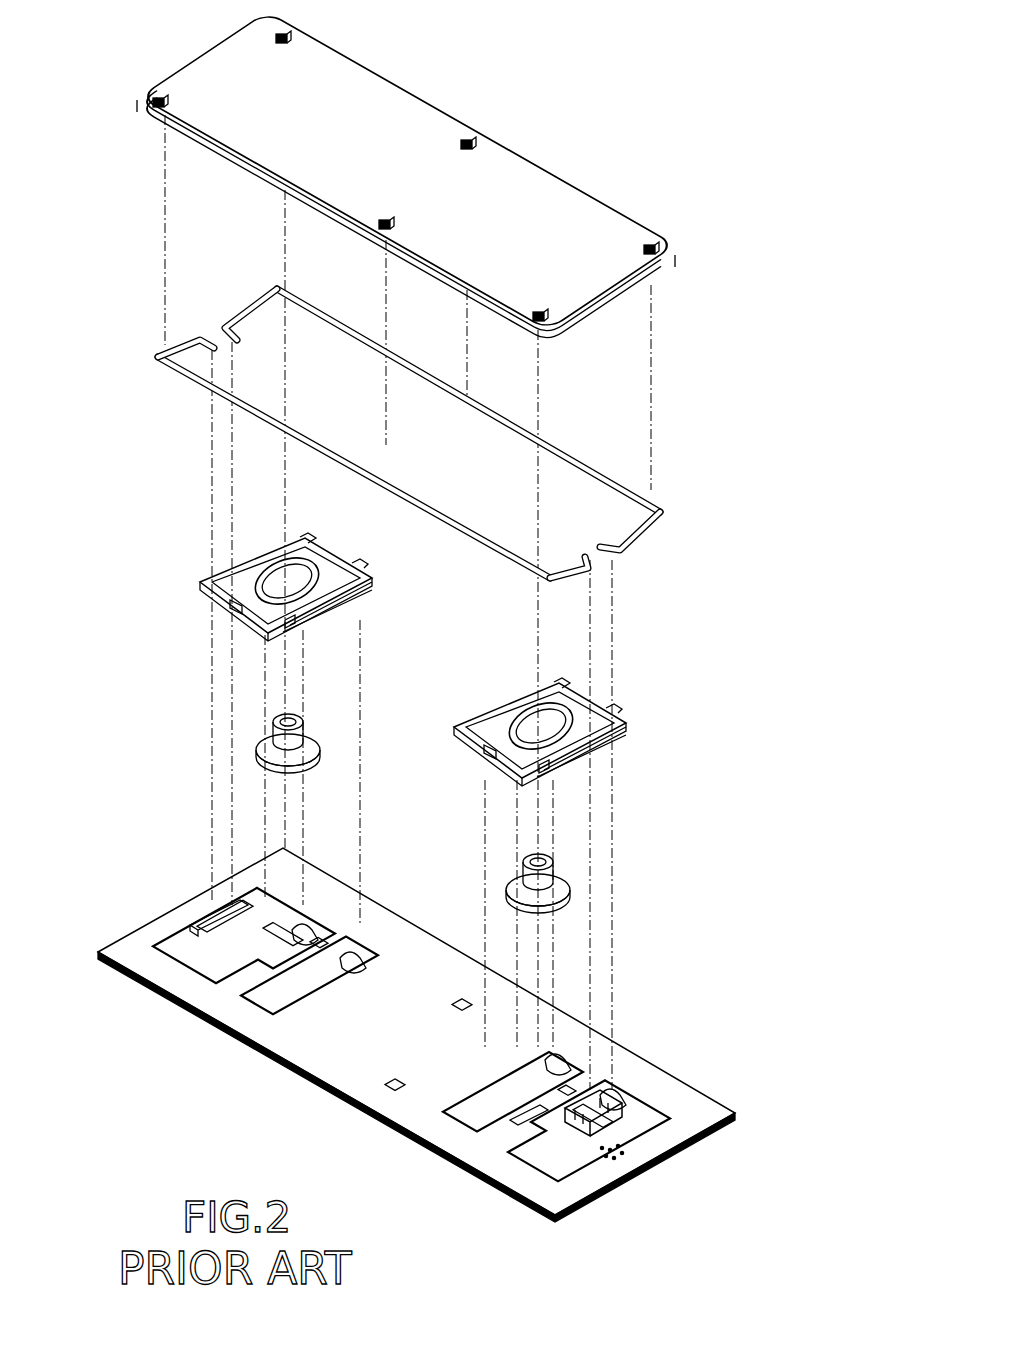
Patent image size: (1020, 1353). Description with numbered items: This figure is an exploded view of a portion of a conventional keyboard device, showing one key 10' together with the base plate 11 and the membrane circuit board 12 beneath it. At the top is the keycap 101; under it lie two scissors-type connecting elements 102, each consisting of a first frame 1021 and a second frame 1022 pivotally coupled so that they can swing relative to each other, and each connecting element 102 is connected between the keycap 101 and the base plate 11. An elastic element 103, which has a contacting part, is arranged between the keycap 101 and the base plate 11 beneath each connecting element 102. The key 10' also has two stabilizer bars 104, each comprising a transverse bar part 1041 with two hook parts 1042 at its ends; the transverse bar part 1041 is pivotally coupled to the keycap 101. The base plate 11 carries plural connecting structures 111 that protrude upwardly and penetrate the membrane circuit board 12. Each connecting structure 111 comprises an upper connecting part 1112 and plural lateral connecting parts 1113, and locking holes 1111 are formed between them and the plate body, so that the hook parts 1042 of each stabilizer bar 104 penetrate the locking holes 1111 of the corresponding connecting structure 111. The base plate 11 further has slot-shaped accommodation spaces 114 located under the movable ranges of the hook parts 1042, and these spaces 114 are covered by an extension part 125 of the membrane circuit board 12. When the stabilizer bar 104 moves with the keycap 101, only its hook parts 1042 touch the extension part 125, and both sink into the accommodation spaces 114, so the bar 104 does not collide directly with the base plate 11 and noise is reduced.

The key 10' is at (654, 176).
The keycap 101 is at (533, 178).
The scissors-type connecting element 102 is at (413, 652).
The first frame 1021 is at (318, 555).
The second frame 1022 is at (370, 590).
The elastic element 103 is at (300, 748).
The stabilizer bar 104 is at (458, 440).
The transverse bar part 1041 is at (600, 477).
The hook part 1042 is at (225, 325).
The base plate 11 is at (305, 1078).
The connecting structure 111 is at (437, 1063).
The locking hole 1111 is at (600, 1160).
The upper connecting part 1112 is at (215, 920).
The lateral connecting part 1113 is at (190, 940).
The accommodation space 114 is at (600, 1258).
The membrane circuit board 12 is at (405, 950).
The extension part 125 is at (695, 1118).